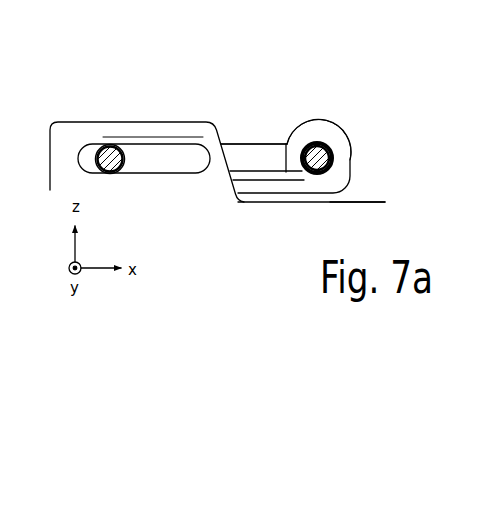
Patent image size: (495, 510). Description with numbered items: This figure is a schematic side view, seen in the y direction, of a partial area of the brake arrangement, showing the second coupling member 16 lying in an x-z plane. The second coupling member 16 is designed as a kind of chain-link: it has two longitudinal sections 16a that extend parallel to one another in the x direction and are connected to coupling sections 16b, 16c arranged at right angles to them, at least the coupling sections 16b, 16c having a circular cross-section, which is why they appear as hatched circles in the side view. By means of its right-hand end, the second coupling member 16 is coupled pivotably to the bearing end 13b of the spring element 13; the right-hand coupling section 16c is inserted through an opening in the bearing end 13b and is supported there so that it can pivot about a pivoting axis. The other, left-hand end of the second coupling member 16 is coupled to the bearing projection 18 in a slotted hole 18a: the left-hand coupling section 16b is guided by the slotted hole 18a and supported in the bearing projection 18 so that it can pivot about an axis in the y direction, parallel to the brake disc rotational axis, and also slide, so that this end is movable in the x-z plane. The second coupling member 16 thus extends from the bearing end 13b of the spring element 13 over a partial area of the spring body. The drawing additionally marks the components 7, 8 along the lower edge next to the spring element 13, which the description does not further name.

The bearing projection 18 is at (84, 121).
The slotted hole 18a is at (108, 147).
The left-hand coupling section 16b is at (121, 170).
The second coupling member 16 is at (248, 142).
The longitudinal sections 16a is at (231, 152).
The right-hand coupling section 16c is at (316, 141).
The bearing end 13b is at (342, 130).
The spring element 13 is at (276, 205).
The door 7 is at (353, 210).
The body 8 is at (353, 210).